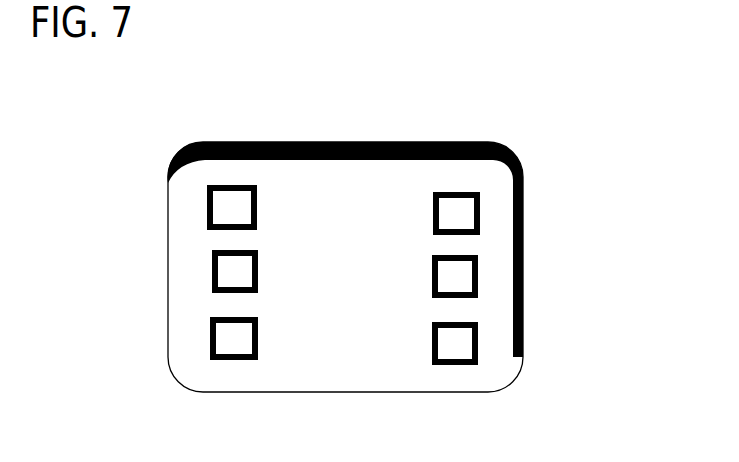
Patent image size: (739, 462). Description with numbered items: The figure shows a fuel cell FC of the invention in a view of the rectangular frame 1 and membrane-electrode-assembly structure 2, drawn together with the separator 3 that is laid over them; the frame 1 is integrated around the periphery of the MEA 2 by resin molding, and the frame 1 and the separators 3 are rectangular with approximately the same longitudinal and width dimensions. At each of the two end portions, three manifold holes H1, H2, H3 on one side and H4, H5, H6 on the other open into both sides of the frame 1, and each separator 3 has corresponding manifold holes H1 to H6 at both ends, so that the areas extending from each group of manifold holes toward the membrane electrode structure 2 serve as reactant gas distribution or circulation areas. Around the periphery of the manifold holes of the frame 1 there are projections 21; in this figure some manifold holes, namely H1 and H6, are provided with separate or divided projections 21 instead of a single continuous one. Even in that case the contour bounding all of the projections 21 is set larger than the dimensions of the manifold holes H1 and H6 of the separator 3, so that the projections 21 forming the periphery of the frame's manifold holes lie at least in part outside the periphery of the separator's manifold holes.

The fuel cell FC is at (242, 133).
The frame 1 is at (410, 143).
The membrane-electrode-assembly structure 2 is at (345, 267).
The separator 3 is at (341, 143).
The projection 21 is at (259, 277).
The manifold hole H1 is at (222, 203).
The manifold hole H2 is at (213, 270).
The manifold hole H3 is at (222, 337).
The manifold hole H4 is at (458, 210).
The manifold hole H5 is at (460, 268).
The manifold hole H6 is at (462, 340).